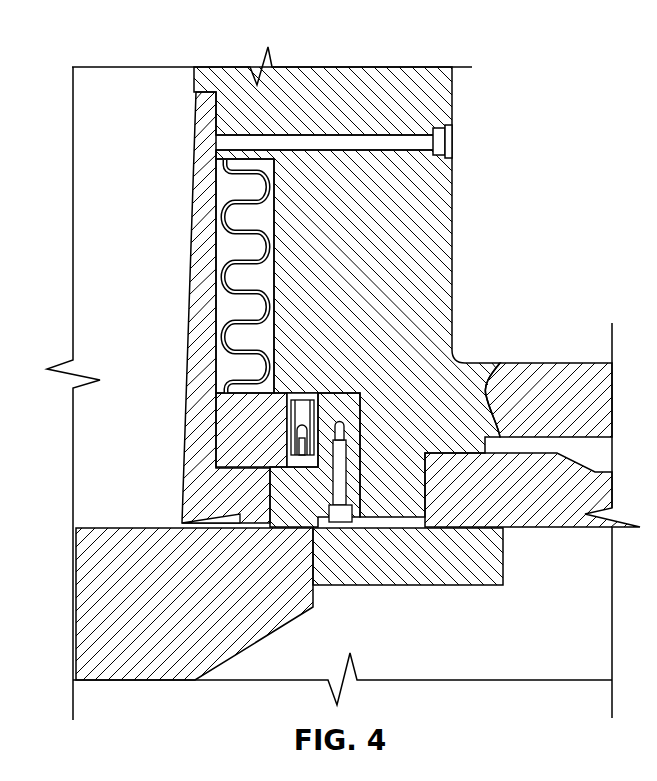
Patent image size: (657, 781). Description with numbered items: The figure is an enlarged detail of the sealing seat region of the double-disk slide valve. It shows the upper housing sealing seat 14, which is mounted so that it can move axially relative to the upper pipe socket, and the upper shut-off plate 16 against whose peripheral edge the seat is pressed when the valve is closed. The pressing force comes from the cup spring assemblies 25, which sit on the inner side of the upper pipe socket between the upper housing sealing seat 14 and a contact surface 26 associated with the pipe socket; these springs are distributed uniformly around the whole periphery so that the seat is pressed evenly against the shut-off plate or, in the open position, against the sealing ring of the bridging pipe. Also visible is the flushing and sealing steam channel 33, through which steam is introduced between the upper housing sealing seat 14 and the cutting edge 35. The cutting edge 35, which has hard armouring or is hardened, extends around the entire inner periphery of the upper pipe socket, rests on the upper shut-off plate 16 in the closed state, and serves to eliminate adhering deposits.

The upper housing sealing seat 14 is at (282, 520).
The upper shut-off plate 16 is at (88, 643).
The cup spring assemblies 25 is at (224, 337).
The contact surface 26 is at (243, 158).
The flushing and sealing steam channel 33 is at (450, 137).
The cutting edge 35 is at (182, 522).